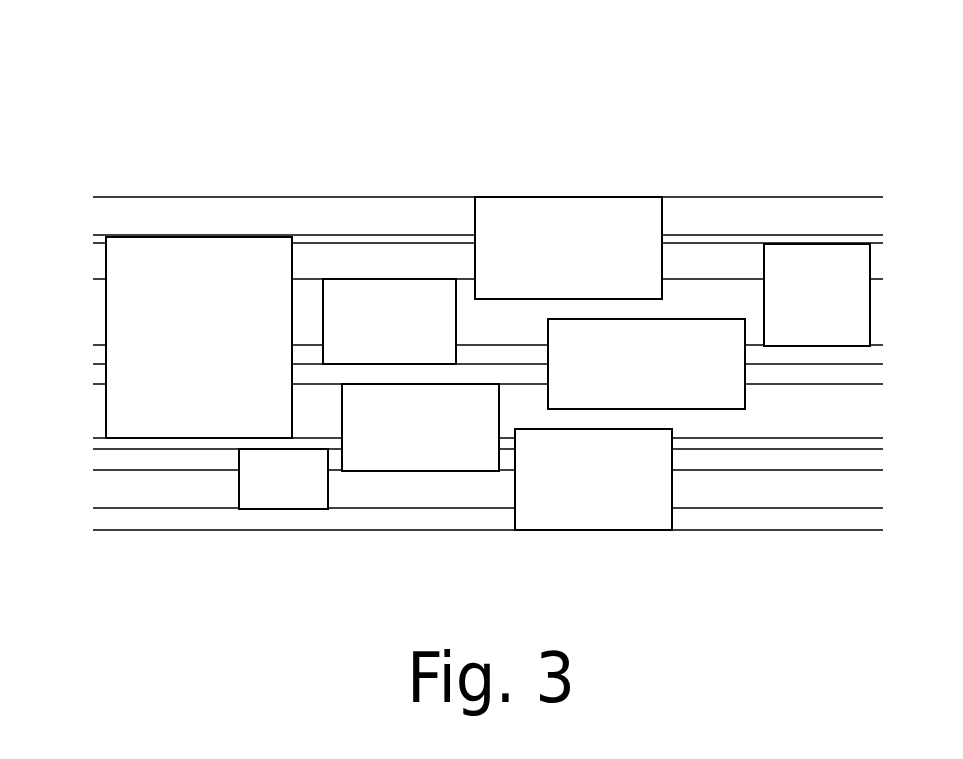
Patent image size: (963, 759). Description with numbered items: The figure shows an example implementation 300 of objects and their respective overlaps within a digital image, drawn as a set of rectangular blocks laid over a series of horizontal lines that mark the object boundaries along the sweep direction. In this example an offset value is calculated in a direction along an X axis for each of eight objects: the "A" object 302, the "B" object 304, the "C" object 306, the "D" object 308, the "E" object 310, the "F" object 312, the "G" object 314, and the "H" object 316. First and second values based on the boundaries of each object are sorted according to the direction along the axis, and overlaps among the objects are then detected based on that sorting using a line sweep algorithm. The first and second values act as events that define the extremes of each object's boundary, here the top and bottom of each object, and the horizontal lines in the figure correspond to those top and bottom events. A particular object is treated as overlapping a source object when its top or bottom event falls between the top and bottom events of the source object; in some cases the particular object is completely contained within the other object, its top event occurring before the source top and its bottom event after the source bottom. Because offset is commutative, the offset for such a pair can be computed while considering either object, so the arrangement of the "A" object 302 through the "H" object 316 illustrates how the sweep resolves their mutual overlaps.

The example implementation 300 is at (158, 80).
The "A" object 302 is at (179, 362).
The "B" object 304 is at (410, 346).
The "C" object 306 is at (548, 272).
The "D" object 308 is at (626, 388).
The "E" object 310 is at (797, 320).
The "F" object 312 is at (614, 504).
The "G" object 314 is at (400, 452).
The "H" object 316 is at (304, 504).